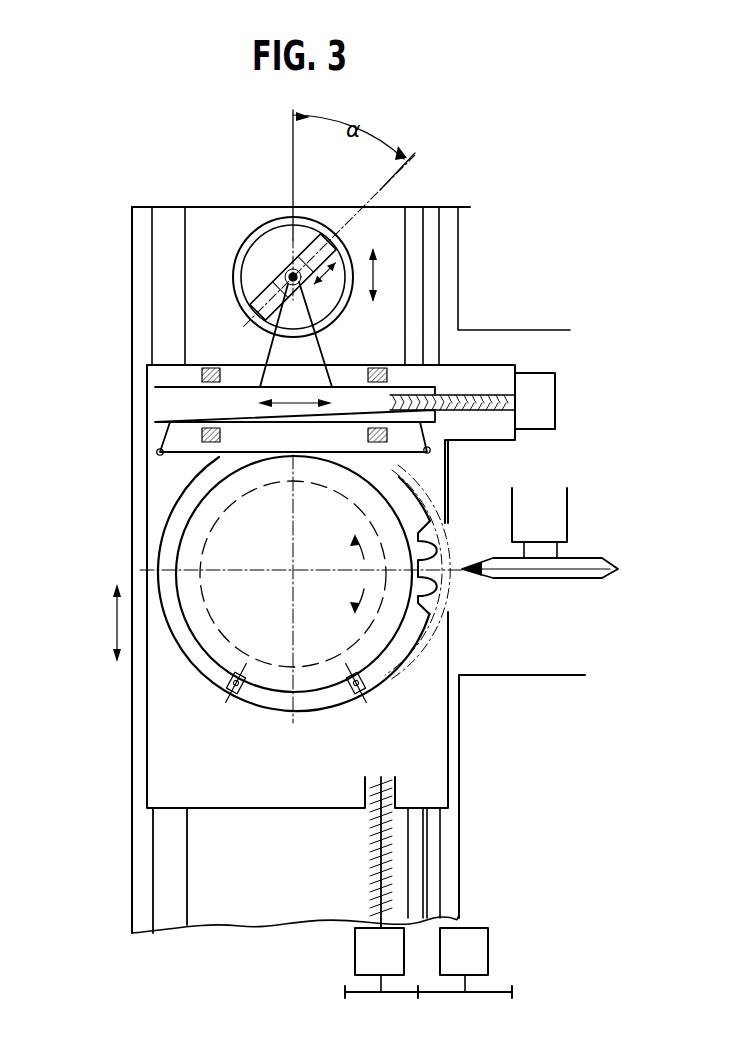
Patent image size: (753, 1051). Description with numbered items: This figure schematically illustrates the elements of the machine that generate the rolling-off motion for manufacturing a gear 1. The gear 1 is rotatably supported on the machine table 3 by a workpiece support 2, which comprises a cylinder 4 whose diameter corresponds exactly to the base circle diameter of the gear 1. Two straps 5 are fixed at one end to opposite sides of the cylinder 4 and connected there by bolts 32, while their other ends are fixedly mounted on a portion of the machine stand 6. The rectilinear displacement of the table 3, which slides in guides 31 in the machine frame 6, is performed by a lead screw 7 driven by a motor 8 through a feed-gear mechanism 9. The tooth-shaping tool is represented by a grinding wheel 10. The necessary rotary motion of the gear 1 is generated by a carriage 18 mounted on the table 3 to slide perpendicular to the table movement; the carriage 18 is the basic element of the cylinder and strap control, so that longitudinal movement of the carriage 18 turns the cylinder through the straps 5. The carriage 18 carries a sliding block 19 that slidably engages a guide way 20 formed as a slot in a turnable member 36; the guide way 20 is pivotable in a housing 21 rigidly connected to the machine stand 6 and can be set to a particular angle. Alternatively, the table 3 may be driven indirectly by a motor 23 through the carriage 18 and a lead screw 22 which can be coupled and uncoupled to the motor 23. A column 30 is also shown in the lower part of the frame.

The gear 1 is at (427, 522).
The workpiece support 2 is at (420, 668).
The machine table 3 is at (176, 740).
The cylinder 4 is at (203, 660).
The straps 5 is at (178, 466).
The machine stand 6 is at (229, 216).
The lead screw 7 is at (385, 848).
The motor 8 is at (480, 955).
The feed-gear mechanism 9 is at (355, 952).
The grinding wheel 10 is at (588, 560).
The carriage 18 is at (176, 404).
The sliding block 19 is at (284, 276).
The guide way 20 is at (268, 318).
The housing 21 is at (273, 217).
The lead screw 22 is at (480, 366).
The motor 23 is at (540, 406).
The column 30 is at (178, 890).
The guides 31 is at (428, 893).
The bolts 32 is at (356, 695).
The member 36 is at (332, 302).